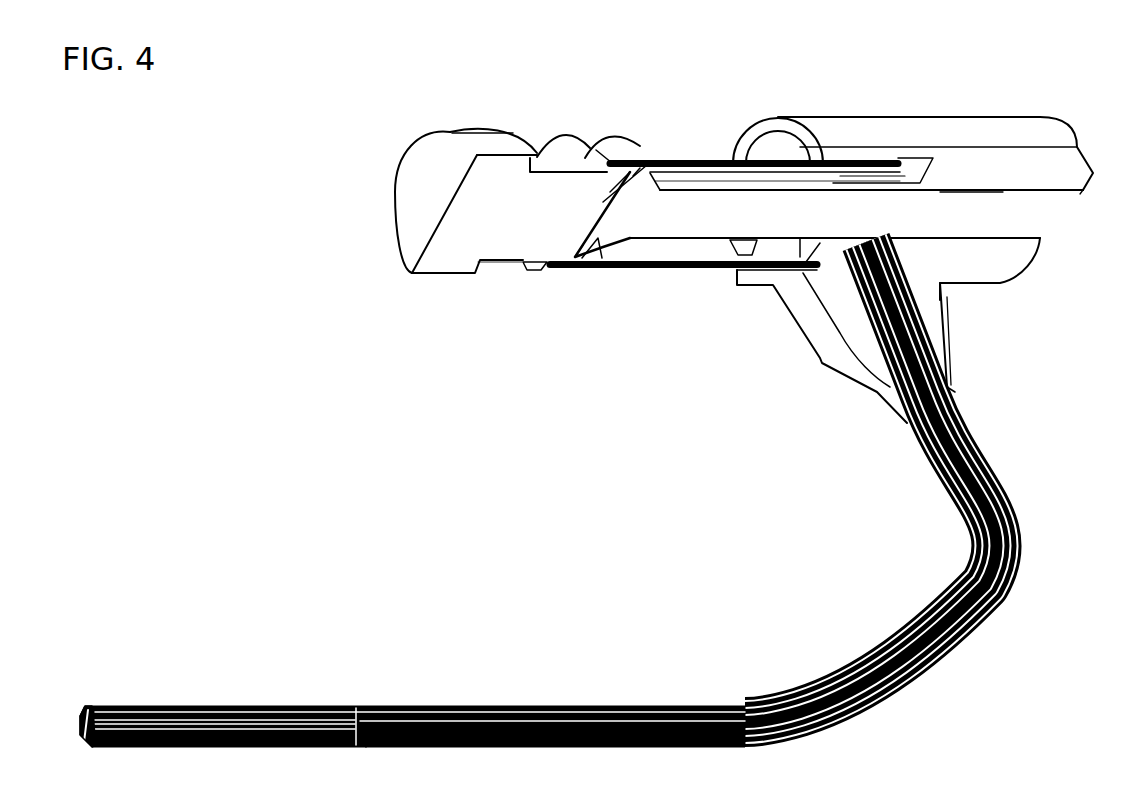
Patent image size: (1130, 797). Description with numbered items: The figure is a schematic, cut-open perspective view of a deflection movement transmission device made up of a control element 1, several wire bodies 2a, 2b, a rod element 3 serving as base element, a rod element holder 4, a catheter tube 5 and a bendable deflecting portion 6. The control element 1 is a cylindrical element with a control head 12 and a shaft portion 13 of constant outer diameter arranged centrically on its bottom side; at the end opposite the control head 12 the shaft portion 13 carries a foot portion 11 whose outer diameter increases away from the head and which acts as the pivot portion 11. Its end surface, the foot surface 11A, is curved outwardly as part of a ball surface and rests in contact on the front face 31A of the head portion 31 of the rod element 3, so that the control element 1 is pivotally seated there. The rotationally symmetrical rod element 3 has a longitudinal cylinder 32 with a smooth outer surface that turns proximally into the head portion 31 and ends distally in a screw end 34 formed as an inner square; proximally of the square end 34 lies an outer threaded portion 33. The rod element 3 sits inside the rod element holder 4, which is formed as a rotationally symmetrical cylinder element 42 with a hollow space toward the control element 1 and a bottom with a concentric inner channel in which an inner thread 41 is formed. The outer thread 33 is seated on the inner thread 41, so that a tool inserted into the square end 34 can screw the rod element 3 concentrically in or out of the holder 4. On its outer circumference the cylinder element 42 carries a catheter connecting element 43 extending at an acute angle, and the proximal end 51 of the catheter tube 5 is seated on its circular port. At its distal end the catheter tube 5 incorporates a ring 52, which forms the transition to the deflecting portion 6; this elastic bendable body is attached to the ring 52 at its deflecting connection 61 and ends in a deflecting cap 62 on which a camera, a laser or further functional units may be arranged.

The control element 1 is at (412, 243).
The wire body 2a is at (687, 160).
The wire body 2b is at (680, 270).
The rod element 3 is at (927, 207).
The rod element holder 4 is at (1073, 165).
The catheter tube 5 is at (1000, 587).
The deflecting portion 6 is at (225, 705).
The foot portion (pivot portion) 11 is at (584, 250).
The foot surface 11A is at (647, 163).
The control head 12 is at (493, 143).
The shaft portion 13 is at (500, 250).
The head portion 31 is at (637, 180).
The front face 31A is at (600, 262).
The longitudinal cylinder 32 is at (720, 205).
The outer threaded portion 33 is at (957, 240).
The screw end (square end) 34 is at (1047, 197).
The inner thread 41 is at (980, 187).
The cylinder element 42 is at (890, 155).
The catheter connecting element 43 is at (880, 390).
The proximal end of the catheter tube 51 is at (955, 388).
The ring 52 is at (365, 747).
The deflecting connection 61 is at (360, 705).
The deflecting cap 62 is at (85, 707).